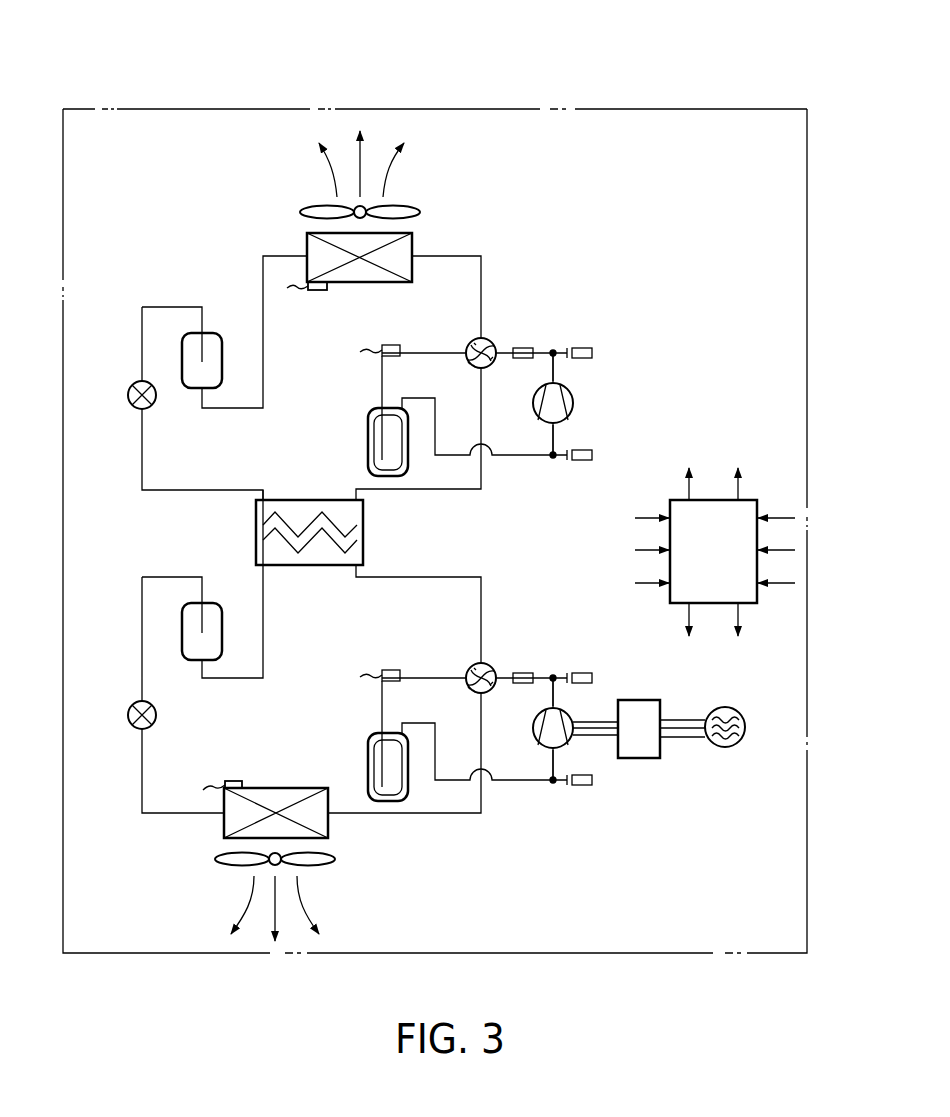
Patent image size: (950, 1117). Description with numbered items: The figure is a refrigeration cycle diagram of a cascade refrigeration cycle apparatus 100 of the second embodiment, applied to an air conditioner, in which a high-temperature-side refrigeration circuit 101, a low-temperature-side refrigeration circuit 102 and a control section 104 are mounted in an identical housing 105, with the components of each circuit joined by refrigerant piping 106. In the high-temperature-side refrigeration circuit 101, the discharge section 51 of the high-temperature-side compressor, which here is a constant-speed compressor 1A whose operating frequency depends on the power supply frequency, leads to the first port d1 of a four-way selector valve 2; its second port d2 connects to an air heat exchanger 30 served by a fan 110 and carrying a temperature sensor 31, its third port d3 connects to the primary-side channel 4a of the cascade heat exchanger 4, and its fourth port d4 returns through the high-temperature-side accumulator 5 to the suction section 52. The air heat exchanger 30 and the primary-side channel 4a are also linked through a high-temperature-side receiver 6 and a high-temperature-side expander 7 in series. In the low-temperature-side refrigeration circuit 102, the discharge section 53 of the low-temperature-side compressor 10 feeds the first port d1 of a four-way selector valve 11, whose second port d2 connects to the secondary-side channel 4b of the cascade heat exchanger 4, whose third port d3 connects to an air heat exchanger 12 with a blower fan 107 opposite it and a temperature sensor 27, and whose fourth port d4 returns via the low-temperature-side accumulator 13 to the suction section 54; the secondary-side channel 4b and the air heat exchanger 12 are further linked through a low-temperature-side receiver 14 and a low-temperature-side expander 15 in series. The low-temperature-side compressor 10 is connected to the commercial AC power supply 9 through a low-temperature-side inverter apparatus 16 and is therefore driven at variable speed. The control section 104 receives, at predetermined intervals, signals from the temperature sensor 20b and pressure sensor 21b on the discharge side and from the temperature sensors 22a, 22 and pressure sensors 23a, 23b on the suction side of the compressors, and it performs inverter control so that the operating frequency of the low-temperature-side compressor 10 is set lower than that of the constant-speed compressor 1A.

The cascade refrigeration cycle apparatus 100 is at (678, 94).
The housing 105 is at (480, 108).
The high-temperature-side refrigeration circuit 101 is at (590, 277).
The low-temperature-side refrigeration circuit 102 is at (657, 852).
The refrigerant piping 106 is at (482, 262).
The fan 110 is at (419, 204).
The air heat exchanger 30 is at (412, 240).
The temperature sensor 31 is at (318, 292).
The high-temperature-side receiver 6 is at (215, 333).
The high-temperature-side expander 7 is at (128, 395).
The low-temperature-side receiver 14 is at (215, 603).
The low-temperature-side expander 15 is at (128, 715).
The cascade heat exchanger 4 is at (285, 500).
The primary-side channel 4a is at (340, 520).
The secondary-side channel 4b is at (323, 554).
The four-way selector valve 2 is at (491, 340).
The four-way selector valve 11 is at (483, 661).
The first port d1 is at (491, 362).
The second port d2 is at (476, 342).
The third port d3 is at (476, 368).
The fourth port d4 is at (469, 362).
The temperature sensor 22a is at (360, 350).
The temperature sensor 22 is at (385, 668).
The temperature sensor 20b is at (533, 347).
The pressure sensor 21b is at (592, 353).
The pressure sensor 23a is at (582, 460).
The pressure sensor 23b is at (582, 786).
The high-temperature-side accumulator 5 is at (369, 415).
The low-temperature-side accumulator 13 is at (368, 741).
The constant-speed compressor 1A is at (573, 403).
The low-temperature-side compressor 10 is at (569, 746).
The discharge section 51 is at (557, 380).
The suction section 52 is at (550, 428).
The discharge section 53 is at (558, 705).
The suction section 54 is at (551, 752).
The low-temperature-side inverter apparatus 16 is at (648, 758).
The commercial AC power supply 9 is at (723, 706).
The air heat exchanger 12 is at (278, 788).
The temperature sensor 27 is at (231, 780).
The blower fan 107 is at (334, 862).
The control section 104 is at (752, 500).